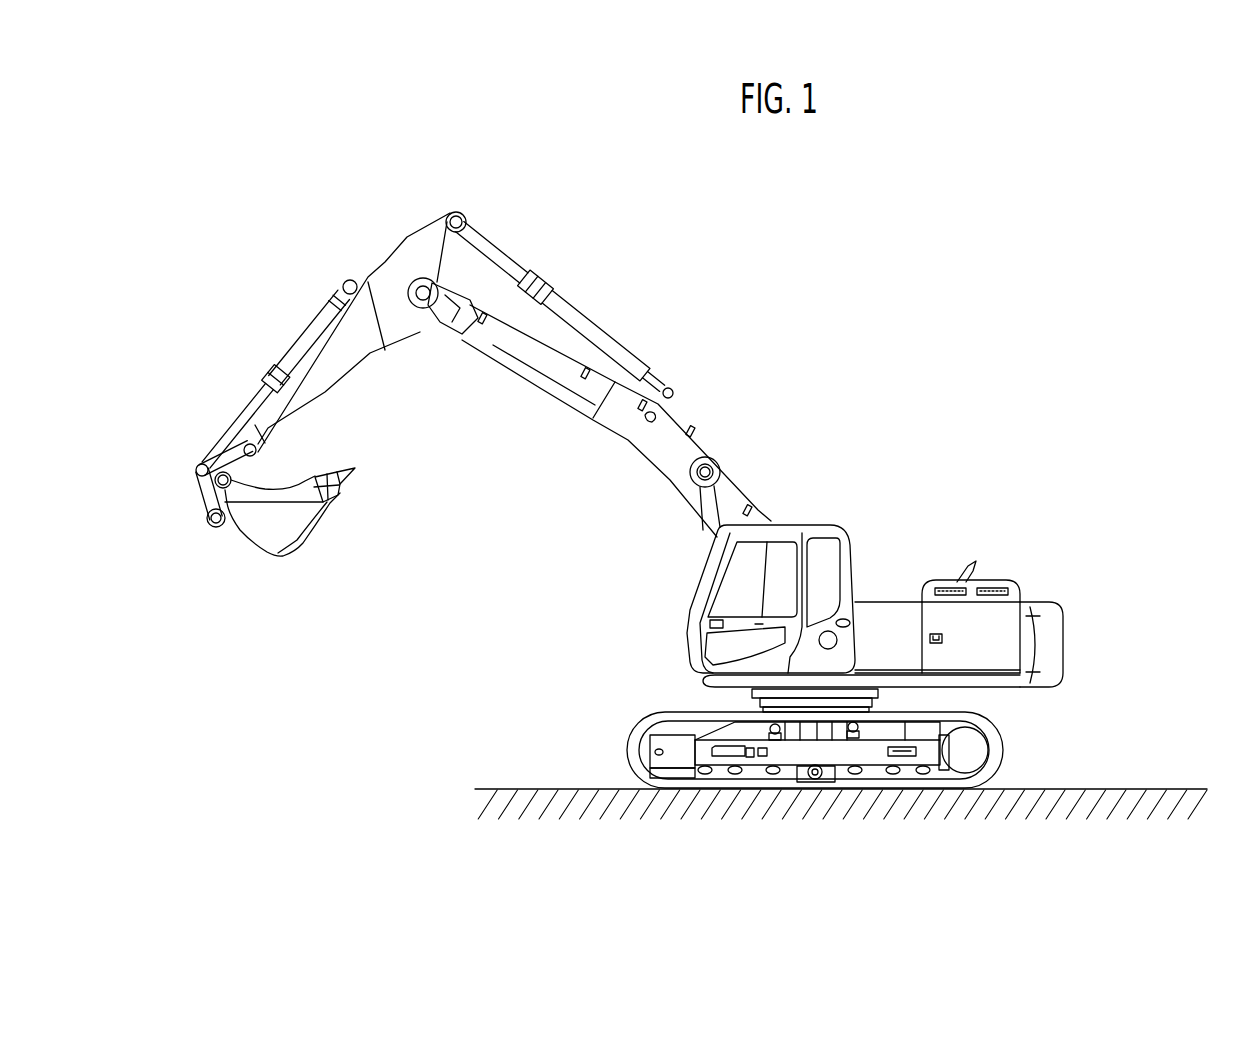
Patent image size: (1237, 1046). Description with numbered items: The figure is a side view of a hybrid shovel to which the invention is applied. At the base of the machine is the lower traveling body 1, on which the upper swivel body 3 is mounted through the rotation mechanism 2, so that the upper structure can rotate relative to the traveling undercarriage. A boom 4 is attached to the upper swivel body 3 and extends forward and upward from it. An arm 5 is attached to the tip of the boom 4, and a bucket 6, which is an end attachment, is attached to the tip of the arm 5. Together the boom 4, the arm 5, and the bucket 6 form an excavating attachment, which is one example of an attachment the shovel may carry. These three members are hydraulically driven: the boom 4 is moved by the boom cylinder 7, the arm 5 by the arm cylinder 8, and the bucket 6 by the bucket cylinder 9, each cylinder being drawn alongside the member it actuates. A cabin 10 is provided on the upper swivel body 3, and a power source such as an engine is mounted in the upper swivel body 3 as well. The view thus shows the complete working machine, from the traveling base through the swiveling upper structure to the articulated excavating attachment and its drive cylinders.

The lower traveling body 1 is at (630, 748).
The rotation mechanism 2 is at (987, 712).
The upper swivel body 3 is at (889, 600).
The boom 4 is at (623, 433).
The arm 5 is at (353, 357).
The bucket 6 is at (272, 556).
The boom cylinder 7 is at (713, 505).
The arm cylinder 8 is at (613, 342).
The bucket cylinder 9 is at (302, 347).
The cabin 10 is at (830, 518).